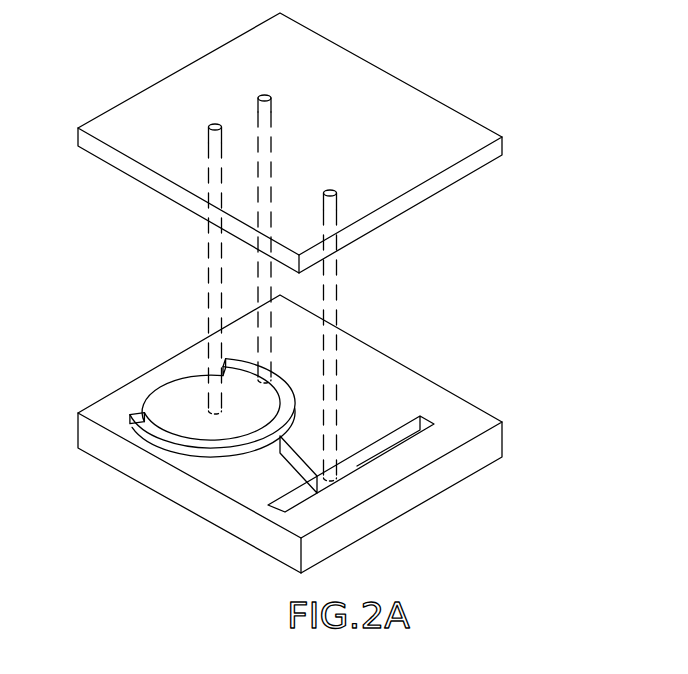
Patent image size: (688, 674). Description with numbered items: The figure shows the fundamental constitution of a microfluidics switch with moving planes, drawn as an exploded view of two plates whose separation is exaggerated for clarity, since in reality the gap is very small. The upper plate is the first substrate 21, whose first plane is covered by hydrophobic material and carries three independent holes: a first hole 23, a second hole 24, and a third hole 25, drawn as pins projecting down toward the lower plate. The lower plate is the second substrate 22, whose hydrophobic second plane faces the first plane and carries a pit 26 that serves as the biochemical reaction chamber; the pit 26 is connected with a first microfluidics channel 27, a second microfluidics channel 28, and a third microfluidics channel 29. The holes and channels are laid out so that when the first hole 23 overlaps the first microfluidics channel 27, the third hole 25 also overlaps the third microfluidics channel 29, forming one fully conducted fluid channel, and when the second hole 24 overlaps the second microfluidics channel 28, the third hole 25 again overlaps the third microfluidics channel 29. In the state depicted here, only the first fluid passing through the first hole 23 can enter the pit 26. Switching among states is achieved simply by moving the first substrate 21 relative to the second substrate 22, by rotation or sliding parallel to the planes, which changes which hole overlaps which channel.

The first substrate 21 is at (398, 97).
The second substrate 22 is at (398, 378).
The first hole 23 is at (262, 97).
The second hole 24 is at (212, 127).
The third hole 25 is at (332, 190).
The pit 26 is at (270, 438).
The first microfluidics channel 27 is at (247, 365).
The second microfluidics channel 28 is at (140, 428).
The third microfluidics channel 29 is at (398, 443).